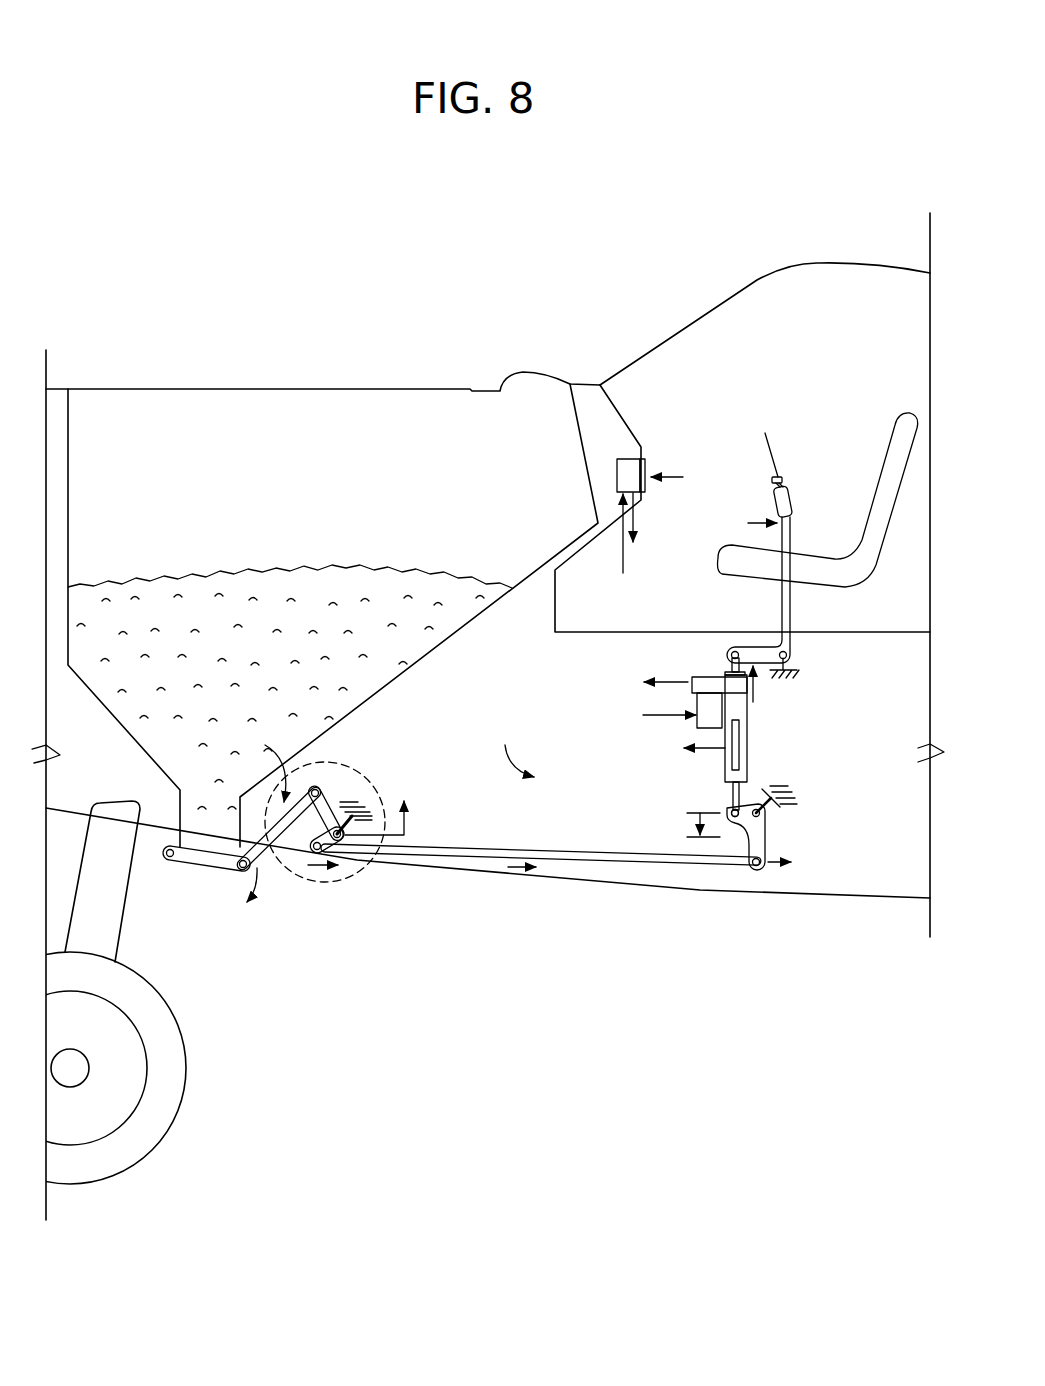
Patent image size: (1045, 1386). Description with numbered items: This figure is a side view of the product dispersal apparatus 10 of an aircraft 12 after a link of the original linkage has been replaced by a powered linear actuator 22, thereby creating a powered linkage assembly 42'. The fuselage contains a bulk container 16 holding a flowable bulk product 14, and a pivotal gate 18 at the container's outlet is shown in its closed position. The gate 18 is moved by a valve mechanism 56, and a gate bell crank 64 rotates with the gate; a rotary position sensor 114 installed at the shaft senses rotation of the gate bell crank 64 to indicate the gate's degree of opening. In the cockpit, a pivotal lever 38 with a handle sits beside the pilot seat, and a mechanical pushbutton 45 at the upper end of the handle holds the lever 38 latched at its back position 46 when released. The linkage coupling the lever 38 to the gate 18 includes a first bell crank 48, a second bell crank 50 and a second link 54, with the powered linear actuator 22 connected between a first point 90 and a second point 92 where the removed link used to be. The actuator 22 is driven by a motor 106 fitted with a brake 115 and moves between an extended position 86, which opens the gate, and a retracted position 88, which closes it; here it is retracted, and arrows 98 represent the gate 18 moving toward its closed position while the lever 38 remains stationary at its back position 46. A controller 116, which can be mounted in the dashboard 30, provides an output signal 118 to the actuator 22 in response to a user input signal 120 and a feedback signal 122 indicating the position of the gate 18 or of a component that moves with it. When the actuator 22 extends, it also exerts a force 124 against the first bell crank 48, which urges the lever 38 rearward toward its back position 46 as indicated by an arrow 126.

The product dispersal apparatus 10 is at (266, 259).
The aircraft 12 is at (718, 306).
The flowable bulk product 14 is at (252, 572).
The bulk container 16 is at (428, 656).
The pivotal gate 18 is at (191, 866).
The powered linear actuator 22 is at (748, 740).
The dashboard 30 is at (637, 445).
The pivotal lever 38 is at (790, 545).
The powered linkage assembly 42' is at (504, 743).
The mechanical pushbutton 45 is at (782, 477).
The back position 46 is at (770, 455).
The first bell crank 48 is at (753, 648).
The second bell crank 50 is at (766, 835).
The second link 54 is at (562, 850).
The valve mechanism 56 is at (375, 778).
The gate bell crank 64 is at (340, 800).
The extended position 86 is at (690, 838).
The retracted position 88 is at (693, 813).
The first point 90 is at (735, 648).
The second point 92 is at (733, 818).
The arrows 98 is at (778, 913).
The motor 106 is at (697, 706).
The rotary position sensor 114 is at (297, 838).
The brake 115 is at (697, 698).
The controller 116 is at (648, 472).
The output signal 118 is at (637, 525).
The user input signal 120 is at (683, 480).
The feedback signal 122 is at (622, 560).
The force 124 is at (757, 688).
The arrow 126 is at (748, 523).